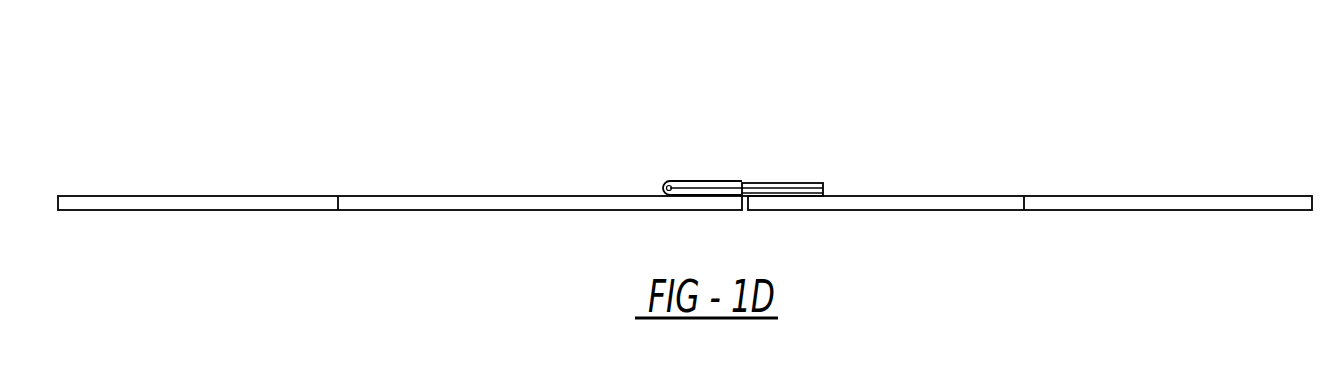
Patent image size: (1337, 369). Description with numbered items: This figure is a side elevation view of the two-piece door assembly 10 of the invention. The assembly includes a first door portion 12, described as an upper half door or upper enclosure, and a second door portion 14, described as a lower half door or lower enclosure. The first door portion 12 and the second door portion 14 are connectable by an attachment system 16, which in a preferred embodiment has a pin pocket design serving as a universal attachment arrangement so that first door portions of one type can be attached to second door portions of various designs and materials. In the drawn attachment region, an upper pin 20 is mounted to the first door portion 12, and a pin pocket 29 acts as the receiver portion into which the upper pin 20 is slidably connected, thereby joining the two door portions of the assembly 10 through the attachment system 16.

The two-piece door assembly 10 is at (1050, 55).
The first door portion 12 is at (947, 178).
The second door portion 14 is at (431, 131).
The attachment system 16 is at (727, 146).
The upper pin 20 is at (793, 183).
The pin pocket 29 is at (685, 181).